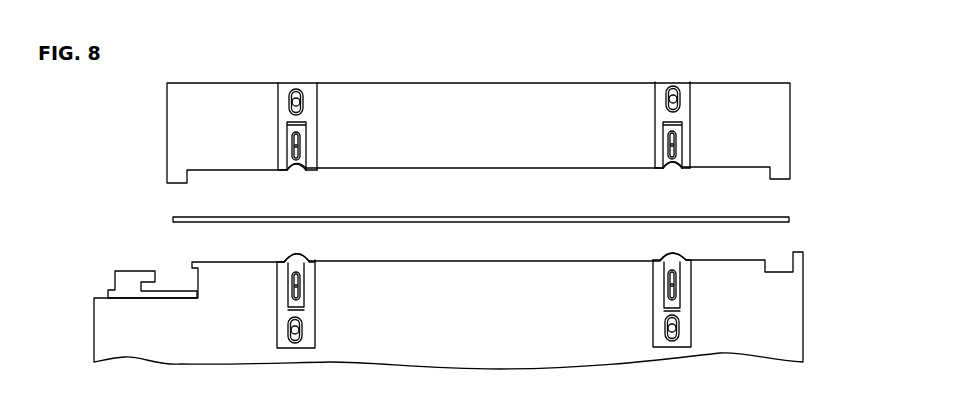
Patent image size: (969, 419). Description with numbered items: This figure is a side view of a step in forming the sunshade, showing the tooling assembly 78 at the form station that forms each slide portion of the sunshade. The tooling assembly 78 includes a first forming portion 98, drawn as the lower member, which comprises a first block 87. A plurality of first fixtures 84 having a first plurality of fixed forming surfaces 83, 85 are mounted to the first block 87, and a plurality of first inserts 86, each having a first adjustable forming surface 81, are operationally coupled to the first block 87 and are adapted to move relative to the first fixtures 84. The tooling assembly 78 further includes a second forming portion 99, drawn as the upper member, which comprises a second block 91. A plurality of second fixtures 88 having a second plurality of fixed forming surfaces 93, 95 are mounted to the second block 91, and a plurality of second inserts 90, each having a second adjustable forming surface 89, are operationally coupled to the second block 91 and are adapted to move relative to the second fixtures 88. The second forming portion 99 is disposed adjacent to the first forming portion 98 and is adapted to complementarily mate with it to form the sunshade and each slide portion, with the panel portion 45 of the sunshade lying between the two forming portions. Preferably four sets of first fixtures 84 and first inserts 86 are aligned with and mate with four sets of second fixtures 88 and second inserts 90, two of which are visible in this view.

The tooling assembly 78 is at (296, 76).
The second block 91 is at (223, 112).
The second forming portion 99 is at (430, 102).
The second fixtures 88 is at (312, 102).
The second inserts 90 is at (301, 151).
The second fixed forming surface 95 is at (287, 171).
The second adjustable forming surface 89 is at (297, 172).
The second fixed forming surface 93 is at (307, 172).
The panel portion 45 is at (778, 216).
The first forming portion 98 is at (412, 327).
The first block 87 is at (216, 352).
The first adjustable forming surface 81 is at (296, 256).
The first fixed forming surface 85 is at (283, 262).
The first fixed forming surface 83 is at (309, 262).
The first inserts 86 is at (301, 306).
The first fixtures 84 is at (310, 325).